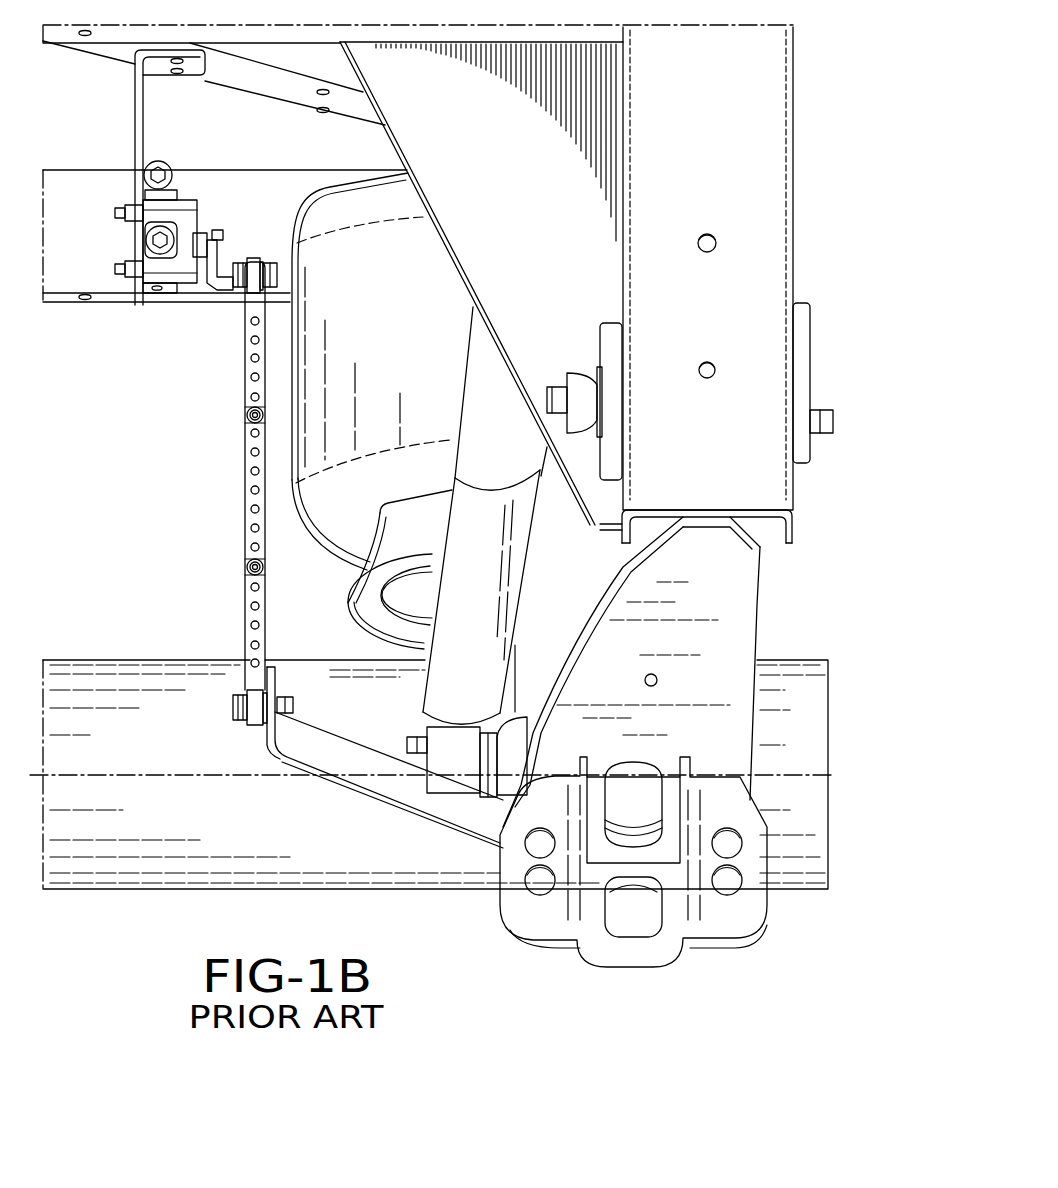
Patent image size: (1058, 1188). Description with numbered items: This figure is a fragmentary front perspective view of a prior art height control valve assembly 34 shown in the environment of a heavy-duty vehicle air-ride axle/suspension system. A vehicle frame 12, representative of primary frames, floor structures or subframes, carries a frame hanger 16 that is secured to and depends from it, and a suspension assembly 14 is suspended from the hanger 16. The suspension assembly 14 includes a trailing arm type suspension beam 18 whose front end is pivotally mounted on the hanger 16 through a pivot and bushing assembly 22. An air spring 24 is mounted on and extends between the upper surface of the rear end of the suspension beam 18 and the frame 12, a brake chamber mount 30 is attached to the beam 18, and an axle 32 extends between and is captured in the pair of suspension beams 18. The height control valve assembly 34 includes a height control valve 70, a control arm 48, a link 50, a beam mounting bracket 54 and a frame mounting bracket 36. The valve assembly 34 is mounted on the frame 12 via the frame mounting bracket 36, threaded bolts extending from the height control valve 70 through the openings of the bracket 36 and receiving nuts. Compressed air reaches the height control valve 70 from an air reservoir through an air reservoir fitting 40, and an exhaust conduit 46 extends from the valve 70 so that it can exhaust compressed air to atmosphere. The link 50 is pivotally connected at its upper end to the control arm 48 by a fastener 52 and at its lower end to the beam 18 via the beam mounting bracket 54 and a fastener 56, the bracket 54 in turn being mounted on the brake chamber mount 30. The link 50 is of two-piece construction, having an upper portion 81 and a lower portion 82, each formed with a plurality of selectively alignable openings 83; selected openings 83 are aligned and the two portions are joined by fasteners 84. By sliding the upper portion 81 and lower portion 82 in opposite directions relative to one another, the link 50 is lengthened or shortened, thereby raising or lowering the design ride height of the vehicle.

The vehicle frame 12 is at (297, 110).
The suspension assembly 14 is at (755, 702).
The frame hanger 16 is at (695, 440).
The suspension beam 18 is at (758, 563).
The pivot and bushing assembly 22 is at (608, 320).
The air spring 24 is at (345, 507).
The brake chamber mount 30 is at (718, 940).
The axle 32 is at (232, 815).
The height control valve assembly 34 is at (212, 191).
The frame mounting bracket 36 is at (137, 120).
The air reservoir fitting 40 is at (160, 168).
The exhaust conduit 46 is at (160, 305).
The control arm 48 is at (227, 252).
The link 50 is at (238, 476).
The fastener 52 is at (270, 265).
The beam mounting bracket 54 is at (365, 765).
The fastener 56 is at (284, 698).
The height control valve 70 is at (160, 213).
The upper portion 81 is at (250, 322).
The lower portion 82 is at (262, 647).
The openings 83 is at (252, 452).
The fasteners 84 is at (248, 413).